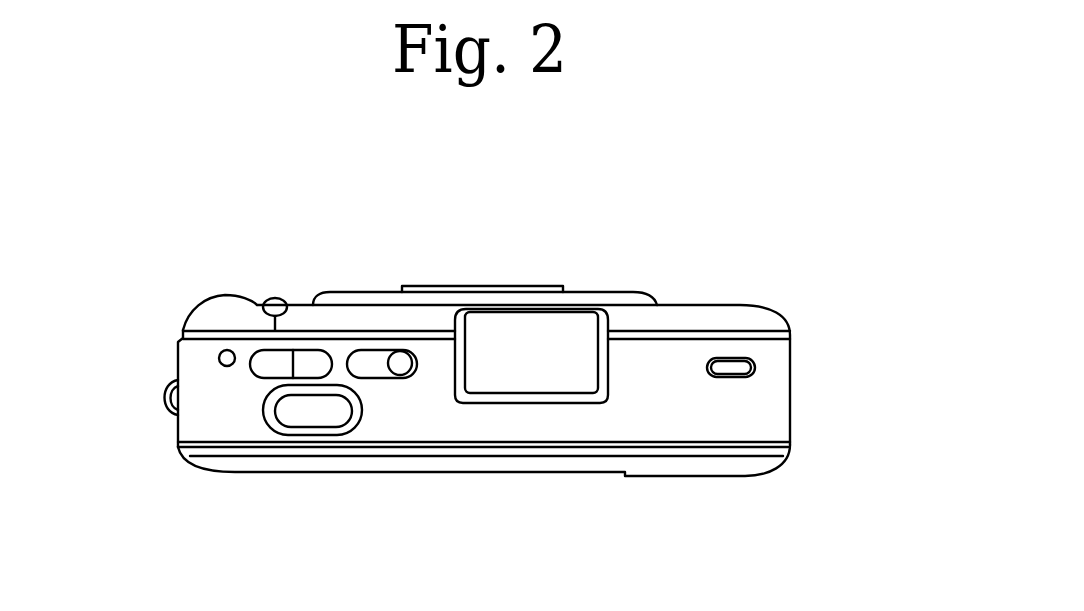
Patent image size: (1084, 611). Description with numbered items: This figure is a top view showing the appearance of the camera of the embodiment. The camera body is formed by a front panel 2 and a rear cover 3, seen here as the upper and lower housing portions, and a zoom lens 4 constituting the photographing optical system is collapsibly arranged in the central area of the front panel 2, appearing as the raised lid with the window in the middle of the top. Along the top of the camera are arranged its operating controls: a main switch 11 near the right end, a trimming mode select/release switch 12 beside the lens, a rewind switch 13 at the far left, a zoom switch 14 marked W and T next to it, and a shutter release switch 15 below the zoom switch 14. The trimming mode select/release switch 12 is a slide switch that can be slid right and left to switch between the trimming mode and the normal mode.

The front panel 2 is at (680, 317).
The rear cover 3 is at (692, 463).
The zoom lens 4 is at (497, 290).
The main switch 11 is at (760, 364).
The trimming mode select/release switch 12 is at (399, 373).
The rewind switch 13 is at (227, 350).
The zoom switch 14 is at (332, 352).
The shutter release switch 15 is at (310, 420).